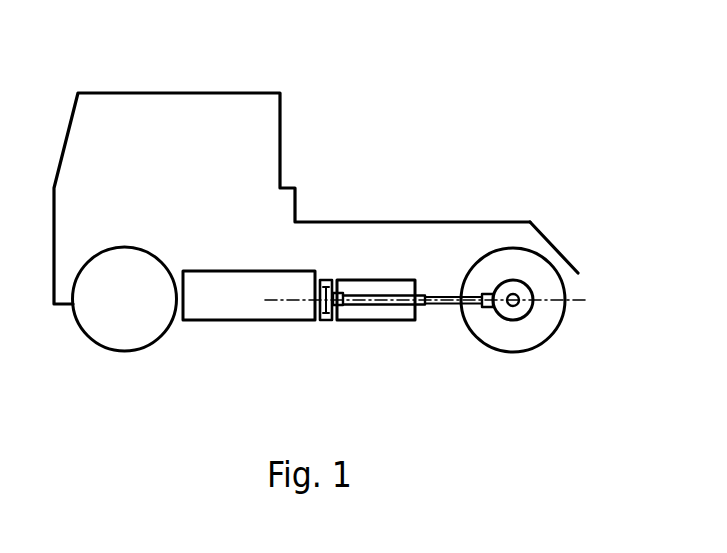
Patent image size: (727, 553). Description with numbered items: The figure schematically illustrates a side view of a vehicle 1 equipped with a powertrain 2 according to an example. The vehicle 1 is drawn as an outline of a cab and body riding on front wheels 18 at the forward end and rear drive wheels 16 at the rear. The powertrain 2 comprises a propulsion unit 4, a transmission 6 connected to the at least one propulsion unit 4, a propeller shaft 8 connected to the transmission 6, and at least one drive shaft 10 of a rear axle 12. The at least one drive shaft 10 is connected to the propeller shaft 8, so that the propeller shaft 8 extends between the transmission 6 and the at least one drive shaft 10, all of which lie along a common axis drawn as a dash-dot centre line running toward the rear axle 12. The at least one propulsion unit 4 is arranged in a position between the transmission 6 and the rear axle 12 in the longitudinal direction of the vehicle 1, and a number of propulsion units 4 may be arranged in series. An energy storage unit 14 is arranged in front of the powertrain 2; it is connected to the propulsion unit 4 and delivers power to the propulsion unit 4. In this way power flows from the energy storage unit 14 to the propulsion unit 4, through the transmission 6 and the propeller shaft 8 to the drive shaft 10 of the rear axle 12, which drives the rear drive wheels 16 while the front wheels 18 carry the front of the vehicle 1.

The vehicle 1 is at (337, 90).
The powertrain 2 is at (365, 343).
The propulsion unit 4 is at (397, 280).
The transmission 6 is at (325, 281).
The propeller shaft 8 is at (425, 293).
The drive shaft 10 is at (513, 320).
The rear axle 12 is at (540, 312).
The energy storage unit 14 is at (214, 271).
The rear drive wheels 16 is at (517, 248).
The front wheels 18 is at (112, 247).